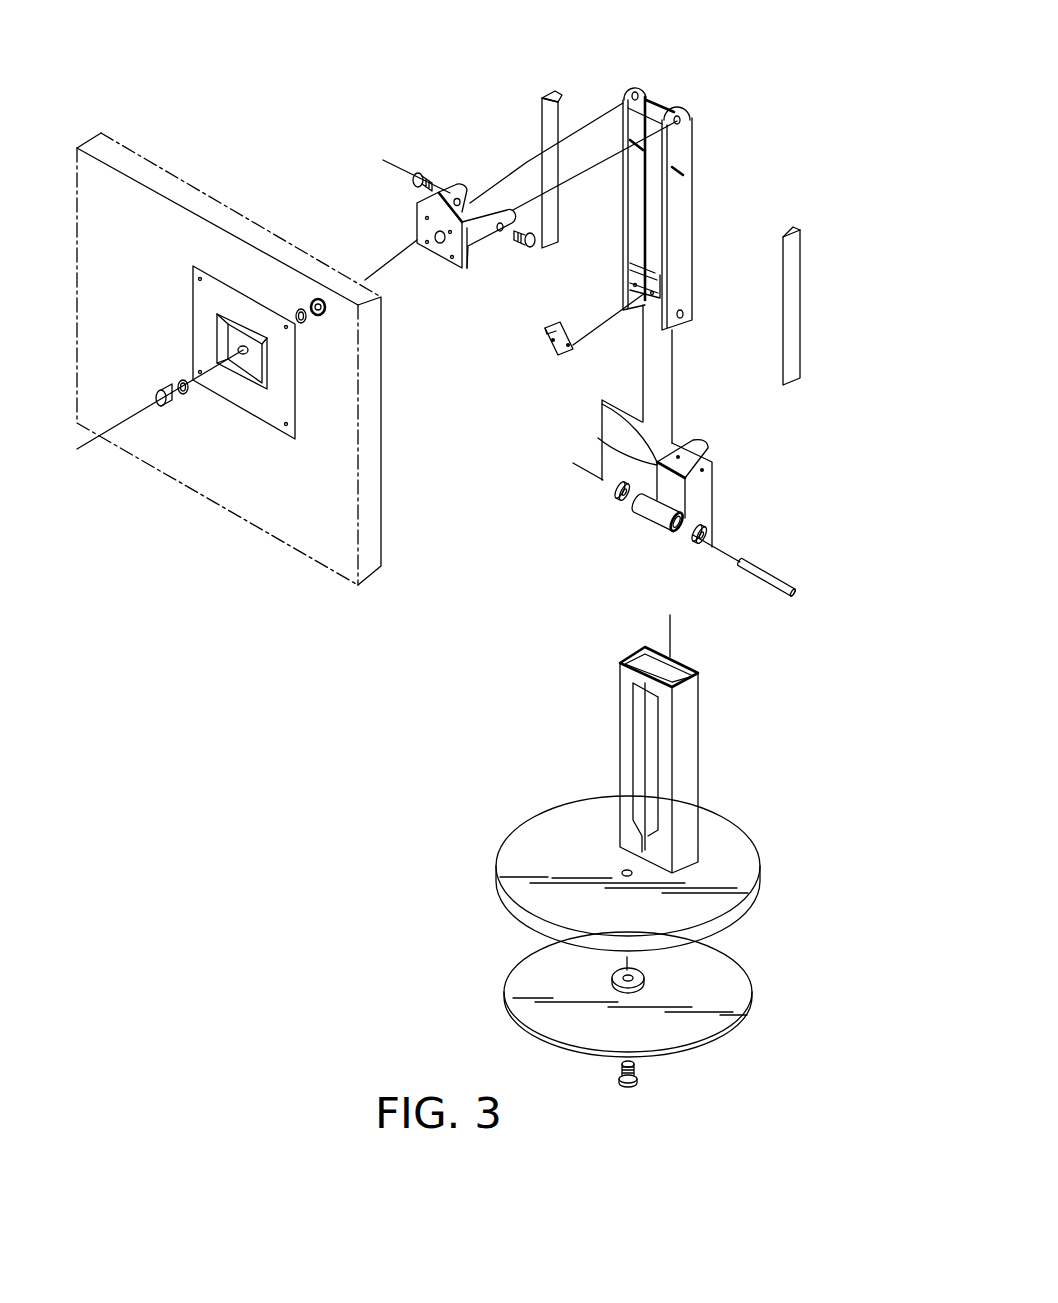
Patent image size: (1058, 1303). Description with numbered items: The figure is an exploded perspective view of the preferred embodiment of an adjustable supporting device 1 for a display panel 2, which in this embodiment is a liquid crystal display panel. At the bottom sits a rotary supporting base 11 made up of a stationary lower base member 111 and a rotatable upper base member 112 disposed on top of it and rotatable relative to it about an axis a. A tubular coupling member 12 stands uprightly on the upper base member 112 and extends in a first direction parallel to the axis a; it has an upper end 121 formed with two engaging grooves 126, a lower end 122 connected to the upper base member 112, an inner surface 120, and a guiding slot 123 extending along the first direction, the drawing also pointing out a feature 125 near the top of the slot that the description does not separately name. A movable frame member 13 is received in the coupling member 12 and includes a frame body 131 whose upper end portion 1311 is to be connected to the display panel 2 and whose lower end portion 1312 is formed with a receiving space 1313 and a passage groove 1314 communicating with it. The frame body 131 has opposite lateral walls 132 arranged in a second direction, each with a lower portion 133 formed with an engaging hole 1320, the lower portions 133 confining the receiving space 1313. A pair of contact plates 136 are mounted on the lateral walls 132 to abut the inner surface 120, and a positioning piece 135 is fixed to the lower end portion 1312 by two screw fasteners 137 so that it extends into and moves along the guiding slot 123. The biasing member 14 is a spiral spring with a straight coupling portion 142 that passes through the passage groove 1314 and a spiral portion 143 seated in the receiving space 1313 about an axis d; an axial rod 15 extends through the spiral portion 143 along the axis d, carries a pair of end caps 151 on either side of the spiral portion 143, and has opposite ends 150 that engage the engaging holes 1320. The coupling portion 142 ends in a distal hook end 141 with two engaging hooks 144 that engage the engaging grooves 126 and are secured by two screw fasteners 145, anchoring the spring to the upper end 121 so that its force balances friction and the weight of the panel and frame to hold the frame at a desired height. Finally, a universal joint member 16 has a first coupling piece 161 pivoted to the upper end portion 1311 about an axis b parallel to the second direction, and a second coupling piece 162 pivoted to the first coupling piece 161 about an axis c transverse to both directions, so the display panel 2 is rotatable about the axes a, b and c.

The adjustable supporting device 1 is at (820, 148).
The display panel 2 is at (118, 142).
The rotary supporting base 11 is at (795, 866).
The stationary lower base member 111 is at (720, 968).
The rotatable upper base member 112 is at (713, 897).
The tubular coupling member 12 is at (765, 757).
The inner surface 120 is at (637, 660).
The upper end 121 is at (685, 687).
The lower end 122 is at (718, 868).
The guiding slot 123 is at (645, 748).
The slot upper end 125 is at (637, 688).
The engaging grooves 126 is at (684, 674).
The movable frame member 13 is at (708, 109).
The frame body 131 is at (651, 249).
The upper end portion 1311 is at (690, 112).
The lower end portion 1312 is at (692, 295).
The receiving space 1313 is at (652, 317).
The passage groove 1314 is at (615, 253).
The engaging hole 1320 is at (683, 317).
The lateral walls 132 is at (683, 215).
The lower portion 133 is at (680, 288).
The positioning piece 135 is at (540, 325).
The contact plates 136 is at (542, 107).
The screw fasteners 137 is at (553, 352).
The biasing member 14 is at (798, 507).
The distal hook end 141 is at (602, 478).
The straight coupling portion 142 is at (687, 500).
The spiral portion 143 is at (650, 518).
The engaging hooks 144 is at (603, 402).
The screw fasteners 145 is at (682, 455).
The axial rod 15 is at (780, 573).
The opposite ends 150 is at (748, 563).
The end caps 151 is at (610, 492).
The universal joint member 16 is at (349, 138).
The first coupling piece 161 is at (455, 192).
The second coupling piece 162 is at (193, 303).
The axis a is at (628, 1093).
The axis b is at (409, 169).
The axis c is at (151, 409).
The axis d is at (578, 465).